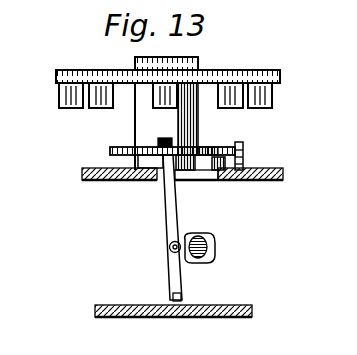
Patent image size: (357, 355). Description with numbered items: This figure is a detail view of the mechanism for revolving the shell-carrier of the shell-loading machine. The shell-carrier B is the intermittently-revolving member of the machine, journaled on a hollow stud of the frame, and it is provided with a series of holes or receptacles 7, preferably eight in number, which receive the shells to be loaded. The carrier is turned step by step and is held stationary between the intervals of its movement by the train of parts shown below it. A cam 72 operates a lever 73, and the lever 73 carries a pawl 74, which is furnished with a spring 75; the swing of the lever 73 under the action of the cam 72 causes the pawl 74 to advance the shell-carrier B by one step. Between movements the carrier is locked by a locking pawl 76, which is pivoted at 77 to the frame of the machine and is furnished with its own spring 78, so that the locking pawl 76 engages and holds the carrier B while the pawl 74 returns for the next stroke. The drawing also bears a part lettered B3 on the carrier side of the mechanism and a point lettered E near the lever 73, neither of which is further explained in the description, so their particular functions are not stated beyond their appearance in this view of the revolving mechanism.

The shell-carrier B is at (220, 73).
The holes or receptacles 7 is at (273, 97).
The lower bar B3 is at (122, 147).
The spring 75 is at (165, 138).
The locking pawl 76 is at (202, 150).
The spring 78 is at (243, 147).
The pivot 77 is at (247, 162).
The pawl 74 is at (157, 150).
The lever 73 is at (172, 212).
The cam 72 is at (215, 245).
The pivot E is at (181, 248).